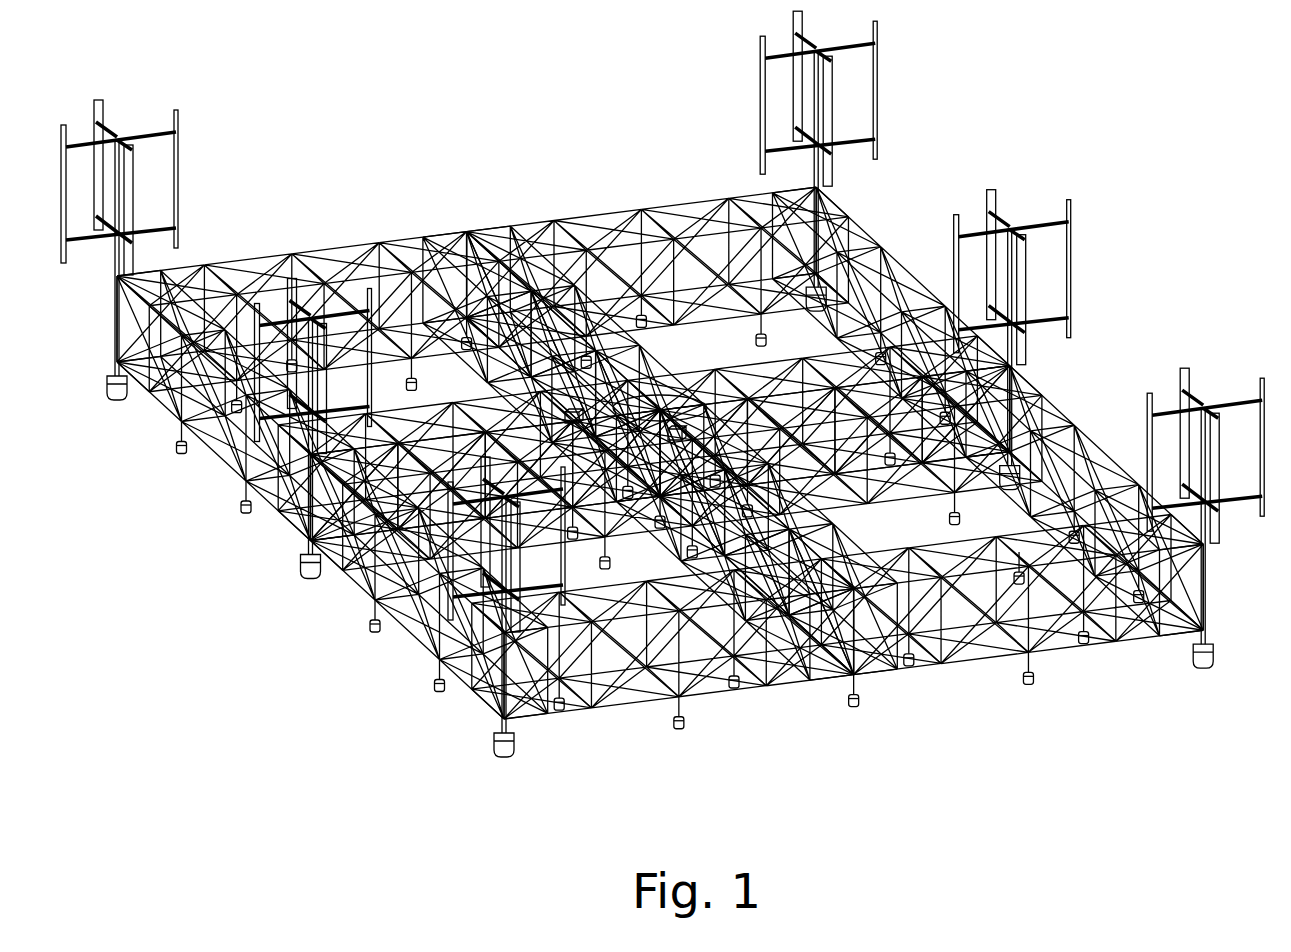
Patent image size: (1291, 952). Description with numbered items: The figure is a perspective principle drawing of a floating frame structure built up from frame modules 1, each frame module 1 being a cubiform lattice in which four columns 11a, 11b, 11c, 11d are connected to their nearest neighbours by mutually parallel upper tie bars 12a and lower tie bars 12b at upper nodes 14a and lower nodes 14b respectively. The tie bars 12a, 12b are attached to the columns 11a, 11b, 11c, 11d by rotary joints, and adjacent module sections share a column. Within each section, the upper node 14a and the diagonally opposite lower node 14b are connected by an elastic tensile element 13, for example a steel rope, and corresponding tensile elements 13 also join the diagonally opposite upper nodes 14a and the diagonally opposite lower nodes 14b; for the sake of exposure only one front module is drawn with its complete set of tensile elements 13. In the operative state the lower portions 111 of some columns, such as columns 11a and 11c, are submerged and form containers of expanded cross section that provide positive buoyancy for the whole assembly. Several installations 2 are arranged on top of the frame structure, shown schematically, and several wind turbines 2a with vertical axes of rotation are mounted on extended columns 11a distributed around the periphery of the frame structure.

The frame module 1 is at (660, 506).
The installation 2 is at (642, 398).
The wind turbine 2a is at (215, 151).
The column 11a is at (488, 708).
The column 11b is at (594, 700).
The column 11c is at (574, 710).
The column 11d is at (433, 680).
The lower portion of column 111 is at (562, 730).
The upper tie bar 12a is at (1000, 658).
The lower tie bar 12b is at (967, 662).
The elastic tensile element 13 is at (893, 605).
The upper node 14a is at (868, 676).
The lower node 14b is at (866, 680).